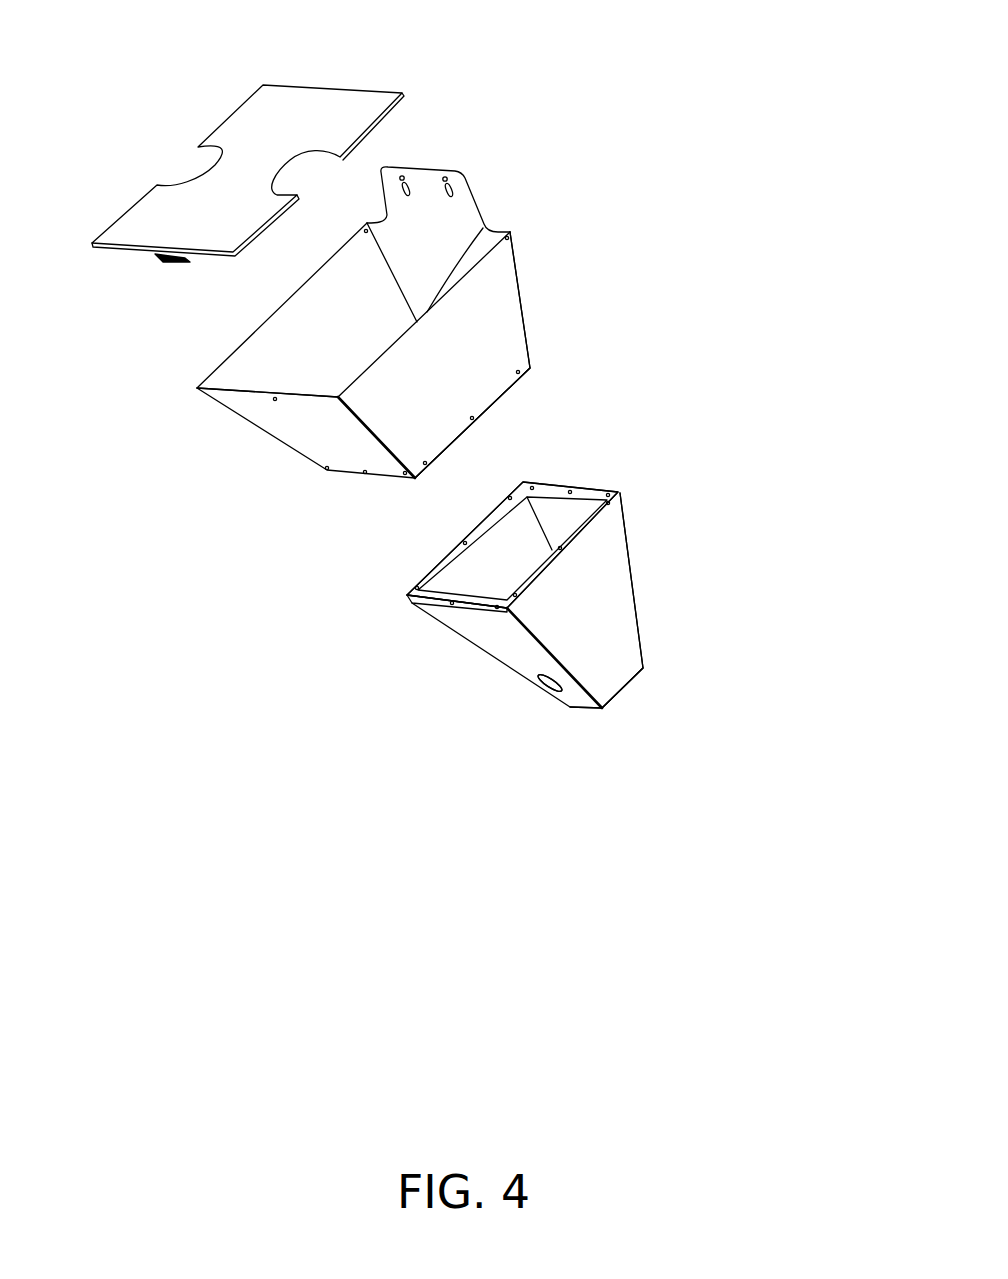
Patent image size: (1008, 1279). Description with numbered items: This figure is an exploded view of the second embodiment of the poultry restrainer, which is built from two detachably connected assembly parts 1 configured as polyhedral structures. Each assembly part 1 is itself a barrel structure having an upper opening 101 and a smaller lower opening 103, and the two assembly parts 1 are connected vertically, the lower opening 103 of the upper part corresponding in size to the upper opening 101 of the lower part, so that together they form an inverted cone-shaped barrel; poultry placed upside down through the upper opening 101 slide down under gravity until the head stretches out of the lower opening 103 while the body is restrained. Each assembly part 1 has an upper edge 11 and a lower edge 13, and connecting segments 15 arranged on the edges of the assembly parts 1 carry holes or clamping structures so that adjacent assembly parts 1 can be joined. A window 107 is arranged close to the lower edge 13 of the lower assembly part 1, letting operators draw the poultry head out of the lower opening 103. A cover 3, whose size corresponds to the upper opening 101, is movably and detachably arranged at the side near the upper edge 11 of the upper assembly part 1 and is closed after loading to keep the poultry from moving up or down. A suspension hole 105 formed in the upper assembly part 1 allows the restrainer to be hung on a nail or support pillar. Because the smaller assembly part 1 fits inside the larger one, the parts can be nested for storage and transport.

The assembly part 1 is at (461, 468).
The cover 3 is at (303, 135).
The upper edge 11 is at (501, 391).
The lower edge 13 is at (472, 418).
The connecting segment 15 is at (578, 490).
The upper opening 101 is at (278, 374).
The lower opening 103 is at (540, 418).
The suspension hole 105 is at (478, 170).
The window 107 is at (528, 672).